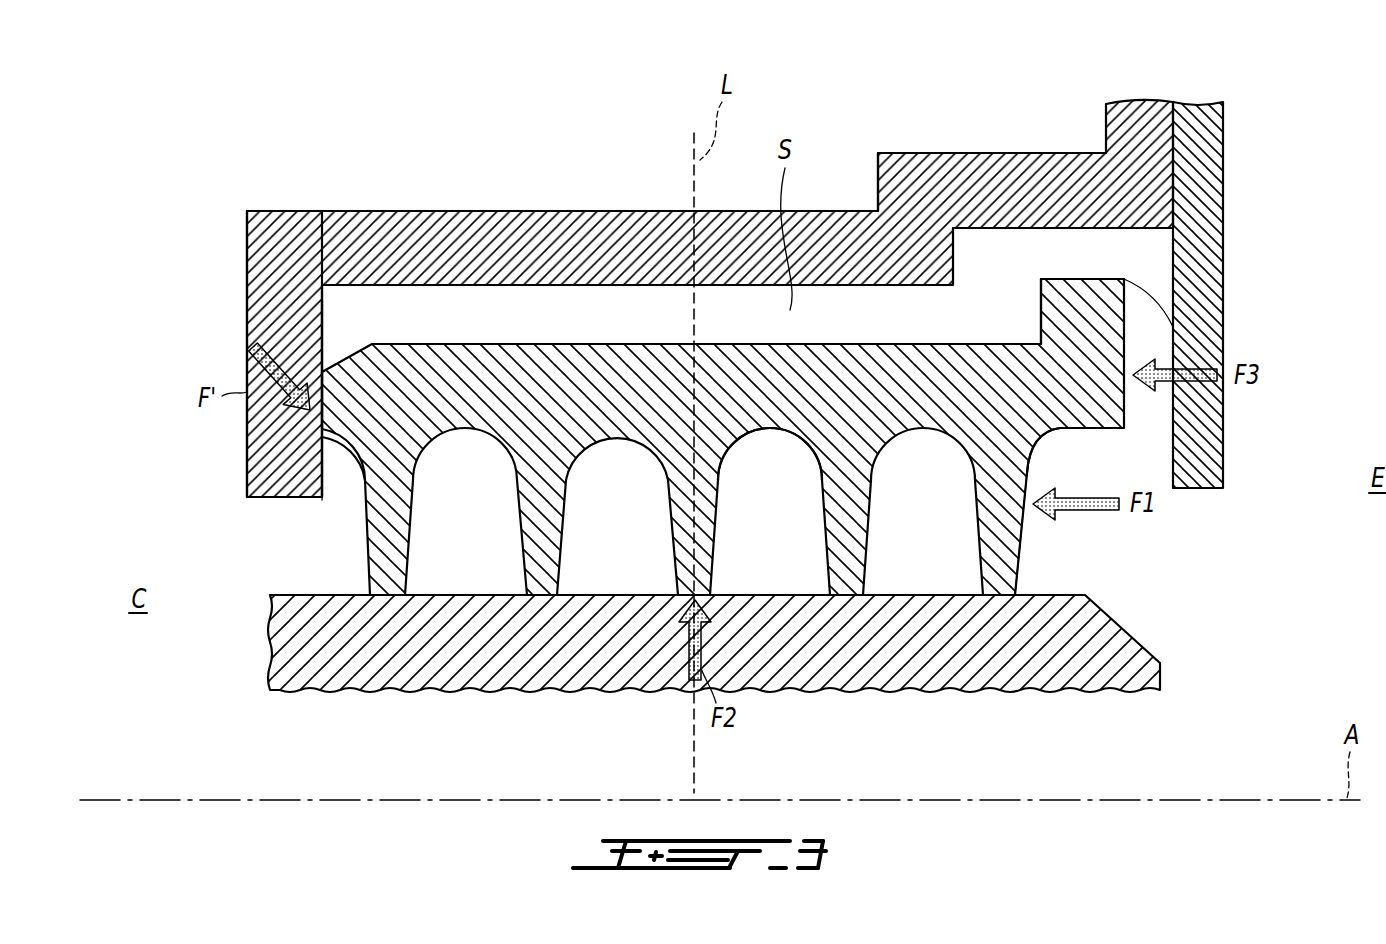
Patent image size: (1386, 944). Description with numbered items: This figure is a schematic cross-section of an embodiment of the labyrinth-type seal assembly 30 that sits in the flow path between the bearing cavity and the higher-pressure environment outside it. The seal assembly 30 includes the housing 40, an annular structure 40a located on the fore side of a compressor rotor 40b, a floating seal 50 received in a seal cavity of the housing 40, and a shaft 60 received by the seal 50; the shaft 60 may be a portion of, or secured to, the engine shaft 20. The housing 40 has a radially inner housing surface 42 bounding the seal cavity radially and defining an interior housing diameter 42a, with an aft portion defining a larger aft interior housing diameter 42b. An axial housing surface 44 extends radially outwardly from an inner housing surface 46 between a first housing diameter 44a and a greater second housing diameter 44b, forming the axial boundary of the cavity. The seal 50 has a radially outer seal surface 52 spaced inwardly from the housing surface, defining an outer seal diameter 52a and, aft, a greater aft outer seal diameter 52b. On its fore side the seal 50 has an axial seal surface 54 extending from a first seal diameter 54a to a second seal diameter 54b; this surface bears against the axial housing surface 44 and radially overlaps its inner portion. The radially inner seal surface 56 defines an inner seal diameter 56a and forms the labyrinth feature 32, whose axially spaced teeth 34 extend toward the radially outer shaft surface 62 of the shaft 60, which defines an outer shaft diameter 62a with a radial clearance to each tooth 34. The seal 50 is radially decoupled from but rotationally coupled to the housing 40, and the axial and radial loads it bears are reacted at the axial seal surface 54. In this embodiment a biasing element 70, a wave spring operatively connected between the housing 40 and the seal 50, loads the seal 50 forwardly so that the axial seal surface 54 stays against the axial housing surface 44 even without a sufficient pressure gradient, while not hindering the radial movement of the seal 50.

The shaft 20 is at (588, 595).
The seal assembly 30 is at (197, 158).
The labyrinth feature 32 is at (1080, 560).
The tooth 34 is at (715, 497).
The housing 40 is at (620, 267).
The annular structure 40a is at (1065, 180).
The rotor 40b is at (1195, 145).
The radially inner housing surface 42 is at (883, 345).
The interior housing diameter 42a is at (695, 285).
The aft interior housing diameter 42b is at (1141, 230).
The axial housing surface 44 is at (333, 437).
The first housing diameter 44a is at (325, 497).
The second housing diameter 44b is at (322, 286).
The inner housing surface 46 is at (297, 497).
The seal 50 is at (280, 519).
The radially outer seal surface 52 is at (878, 285).
The outer seal diameter 52a is at (693, 344).
The aft outer seal diameter 52b is at (1041, 279).
The axial seal surface 54 is at (180, 398).
The first seal diameter 54a is at (322, 440).
The second seal diameter 54b is at (322, 364).
The radially inner seal surface 56 is at (1053, 430).
The inner seal diameter 56a is at (693, 653).
The shaft 60 is at (714, 595).
The radially outer shaft surface 62 is at (495, 593).
The outer shaft diameter 62a is at (693, 587).
The biasing element 70 is at (1153, 418).